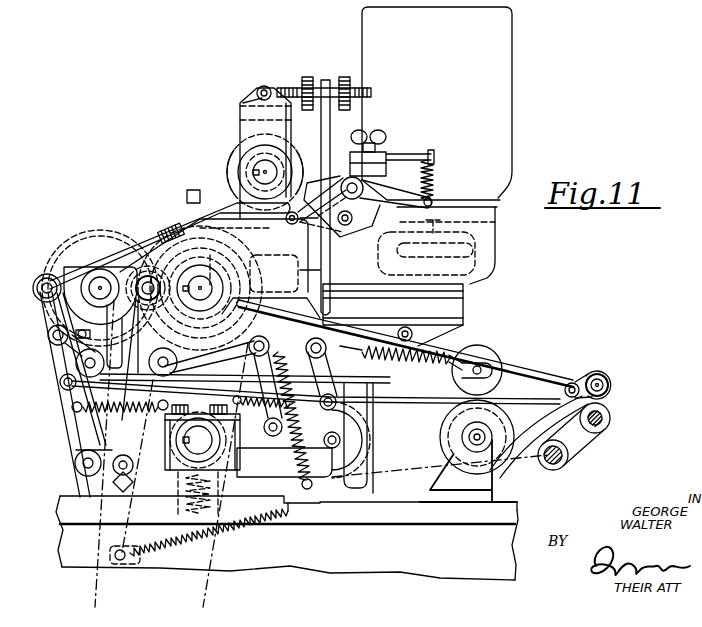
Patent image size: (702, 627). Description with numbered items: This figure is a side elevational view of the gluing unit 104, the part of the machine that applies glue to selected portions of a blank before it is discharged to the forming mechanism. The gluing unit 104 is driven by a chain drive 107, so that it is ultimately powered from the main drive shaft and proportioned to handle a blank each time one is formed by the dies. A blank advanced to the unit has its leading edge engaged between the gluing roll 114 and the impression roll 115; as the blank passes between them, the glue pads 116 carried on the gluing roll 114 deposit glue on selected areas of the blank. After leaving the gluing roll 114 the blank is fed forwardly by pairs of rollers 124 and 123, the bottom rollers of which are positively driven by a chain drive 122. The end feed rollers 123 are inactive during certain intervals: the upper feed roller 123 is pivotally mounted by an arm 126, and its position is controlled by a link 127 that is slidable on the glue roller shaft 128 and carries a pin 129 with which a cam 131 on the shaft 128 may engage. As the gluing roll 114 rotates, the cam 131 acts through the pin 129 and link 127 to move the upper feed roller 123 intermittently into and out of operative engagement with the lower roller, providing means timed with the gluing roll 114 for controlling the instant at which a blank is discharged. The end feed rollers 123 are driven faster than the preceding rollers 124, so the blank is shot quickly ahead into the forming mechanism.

The gluing unit 104 is at (212, 108).
The chain drive 107 is at (210, 590).
The gluing roll 114 is at (170, 218).
The impression roll 115 is at (242, 462).
The glue pads 116 is at (198, 190).
The chain drive 122 is at (390, 402).
The end feed rollers 123 is at (606, 392).
The feed rollers 124 is at (372, 385).
The arm 126 is at (583, 373).
The link 127 is at (545, 380).
The glue roller shaft 128 is at (200, 287).
The pin 129 is at (147, 242).
The cam 131 is at (242, 344).